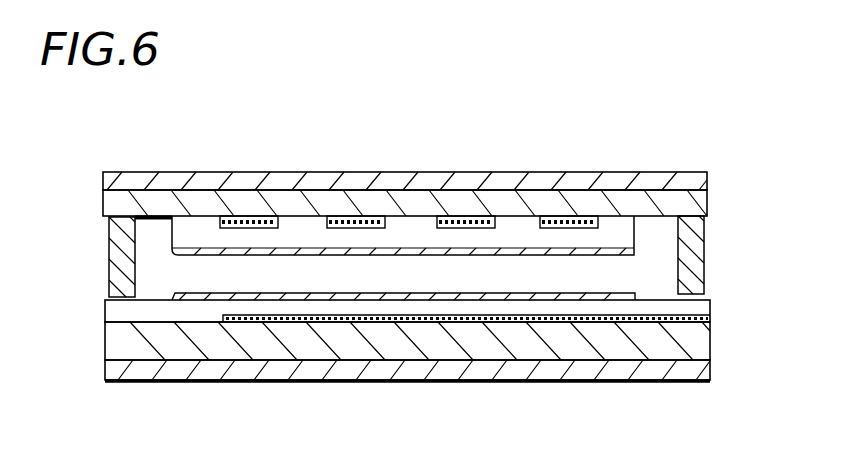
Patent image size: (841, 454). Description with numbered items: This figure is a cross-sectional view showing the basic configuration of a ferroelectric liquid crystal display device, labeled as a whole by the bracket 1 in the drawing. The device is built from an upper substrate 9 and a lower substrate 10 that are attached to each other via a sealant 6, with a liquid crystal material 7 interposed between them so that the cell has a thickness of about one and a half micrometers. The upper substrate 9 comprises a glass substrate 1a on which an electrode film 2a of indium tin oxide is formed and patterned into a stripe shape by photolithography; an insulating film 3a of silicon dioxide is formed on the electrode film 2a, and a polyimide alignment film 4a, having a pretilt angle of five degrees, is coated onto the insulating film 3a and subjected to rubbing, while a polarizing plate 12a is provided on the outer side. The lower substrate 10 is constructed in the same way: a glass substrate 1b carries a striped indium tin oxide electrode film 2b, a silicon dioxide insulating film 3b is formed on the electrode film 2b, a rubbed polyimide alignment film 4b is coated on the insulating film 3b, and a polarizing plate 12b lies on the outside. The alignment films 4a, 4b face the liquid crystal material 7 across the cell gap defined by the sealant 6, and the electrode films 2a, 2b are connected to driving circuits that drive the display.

The liquid crystal display panel 1 is at (31, 174).
The substrate 9 is at (86, 174).
The substrate 10 is at (86, 302).
The liquid crystal material 7 is at (214, 265).
The sealant 6 is at (704, 245).
The polarizing plate 12a is at (303, 178).
The substrate 1a is at (383, 200).
The electrode film 2a is at (458, 215).
The insulating film 3a is at (615, 223).
The alignment film 4a is at (636, 247).
The polarizing plate 12b is at (300, 385).
The substrate 1b is at (397, 350).
The electrode film 2b is at (452, 322).
The insulating film 3b is at (538, 305).
The alignment film 4b is at (610, 300).